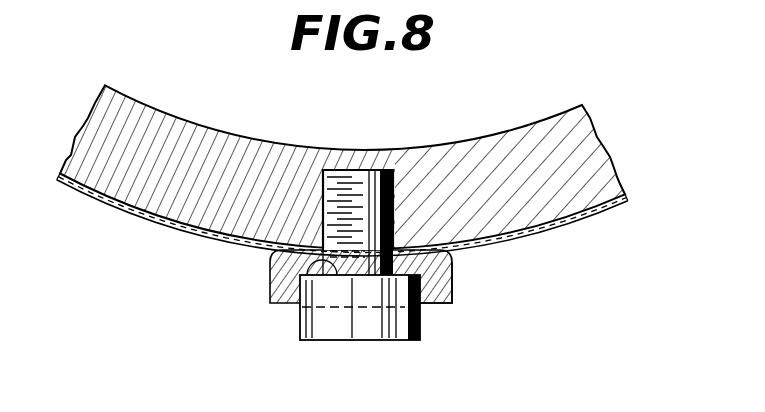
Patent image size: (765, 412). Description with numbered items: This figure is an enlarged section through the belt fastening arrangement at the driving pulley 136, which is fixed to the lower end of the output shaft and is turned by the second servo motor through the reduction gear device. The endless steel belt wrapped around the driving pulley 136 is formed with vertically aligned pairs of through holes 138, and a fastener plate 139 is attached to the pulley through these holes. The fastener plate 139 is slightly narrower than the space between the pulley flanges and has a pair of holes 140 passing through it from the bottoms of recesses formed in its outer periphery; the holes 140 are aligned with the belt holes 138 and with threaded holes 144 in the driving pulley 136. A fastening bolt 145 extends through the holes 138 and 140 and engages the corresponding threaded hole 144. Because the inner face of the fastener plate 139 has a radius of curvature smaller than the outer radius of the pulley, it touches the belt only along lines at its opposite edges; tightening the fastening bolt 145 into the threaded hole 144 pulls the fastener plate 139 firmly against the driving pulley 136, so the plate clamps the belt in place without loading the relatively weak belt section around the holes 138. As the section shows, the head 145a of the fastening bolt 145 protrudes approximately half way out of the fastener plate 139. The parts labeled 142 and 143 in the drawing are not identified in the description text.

The driving pulley 136 is at (445, 152).
The through holes 138 is at (347, 190).
The fastener plate 139 is at (438, 305).
The holes 140 is at (272, 298).
The threaded bore 142 is at (372, 250).
The laminate layer 143 is at (250, 238).
The threaded holes 144 is at (327, 187).
The fastening bolts 145 is at (394, 210).
The heads of the fastener bolt 145a is at (400, 342).